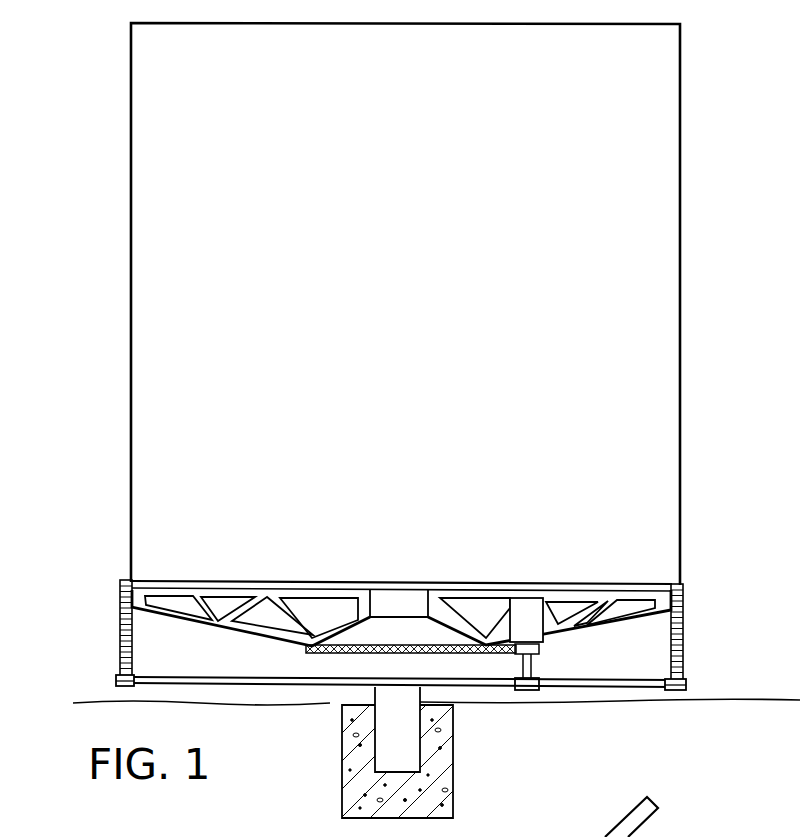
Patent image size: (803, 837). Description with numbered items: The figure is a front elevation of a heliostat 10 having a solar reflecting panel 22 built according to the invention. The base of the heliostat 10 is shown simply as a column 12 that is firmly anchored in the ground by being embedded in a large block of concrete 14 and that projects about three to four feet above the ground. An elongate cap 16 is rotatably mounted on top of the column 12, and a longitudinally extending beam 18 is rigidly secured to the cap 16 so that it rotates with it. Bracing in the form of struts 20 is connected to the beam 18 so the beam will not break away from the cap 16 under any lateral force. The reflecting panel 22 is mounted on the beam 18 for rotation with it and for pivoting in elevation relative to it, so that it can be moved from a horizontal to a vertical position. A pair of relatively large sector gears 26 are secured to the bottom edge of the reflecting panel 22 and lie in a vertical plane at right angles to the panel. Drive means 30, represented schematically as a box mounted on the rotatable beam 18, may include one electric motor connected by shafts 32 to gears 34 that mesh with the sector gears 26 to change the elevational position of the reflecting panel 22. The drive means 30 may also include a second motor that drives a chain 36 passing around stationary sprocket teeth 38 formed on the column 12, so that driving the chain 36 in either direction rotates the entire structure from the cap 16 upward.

The heliostat 10 is at (96, 424).
The column 12 is at (375, 689).
The block of concrete 14 is at (342, 778).
The elongate cap 16 is at (395, 606).
The beam 18 is at (200, 582).
The struts 20 is at (181, 622).
The solar reflecting panel 22 is at (114, 121).
The sector gears 26 is at (121, 606).
The drive means 30 is at (536, 600).
The shafts 32 is at (576, 687).
The gears 34 is at (118, 681).
The chain 36 is at (522, 658).
The sprocket teeth 38 is at (312, 649).